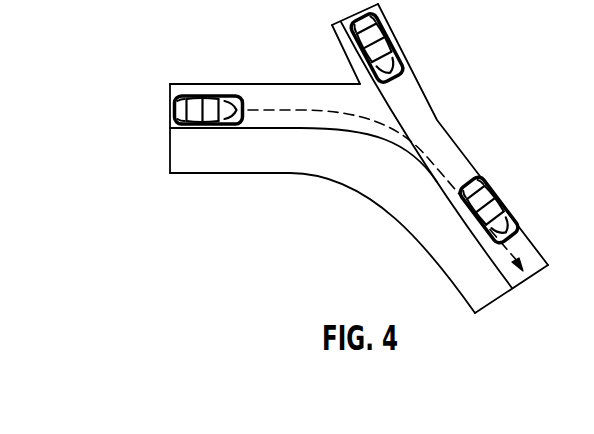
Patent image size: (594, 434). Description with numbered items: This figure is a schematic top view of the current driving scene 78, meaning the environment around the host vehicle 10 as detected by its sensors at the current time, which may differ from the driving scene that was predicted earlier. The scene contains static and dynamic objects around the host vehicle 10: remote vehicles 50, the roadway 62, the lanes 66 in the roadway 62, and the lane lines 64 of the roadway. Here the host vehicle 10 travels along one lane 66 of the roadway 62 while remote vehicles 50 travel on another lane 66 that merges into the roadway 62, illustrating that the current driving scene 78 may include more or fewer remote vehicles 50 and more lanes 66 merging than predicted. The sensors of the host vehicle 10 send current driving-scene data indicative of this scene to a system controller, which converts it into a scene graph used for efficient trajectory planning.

The host vehicle 10 is at (212, 95).
The remote vehicle 50 is at (393, 32).
The roadway 62 is at (421, 88).
The lane line 64 is at (283, 131).
The lane 66 is at (267, 97).
The current driving scene 78 is at (317, 158).